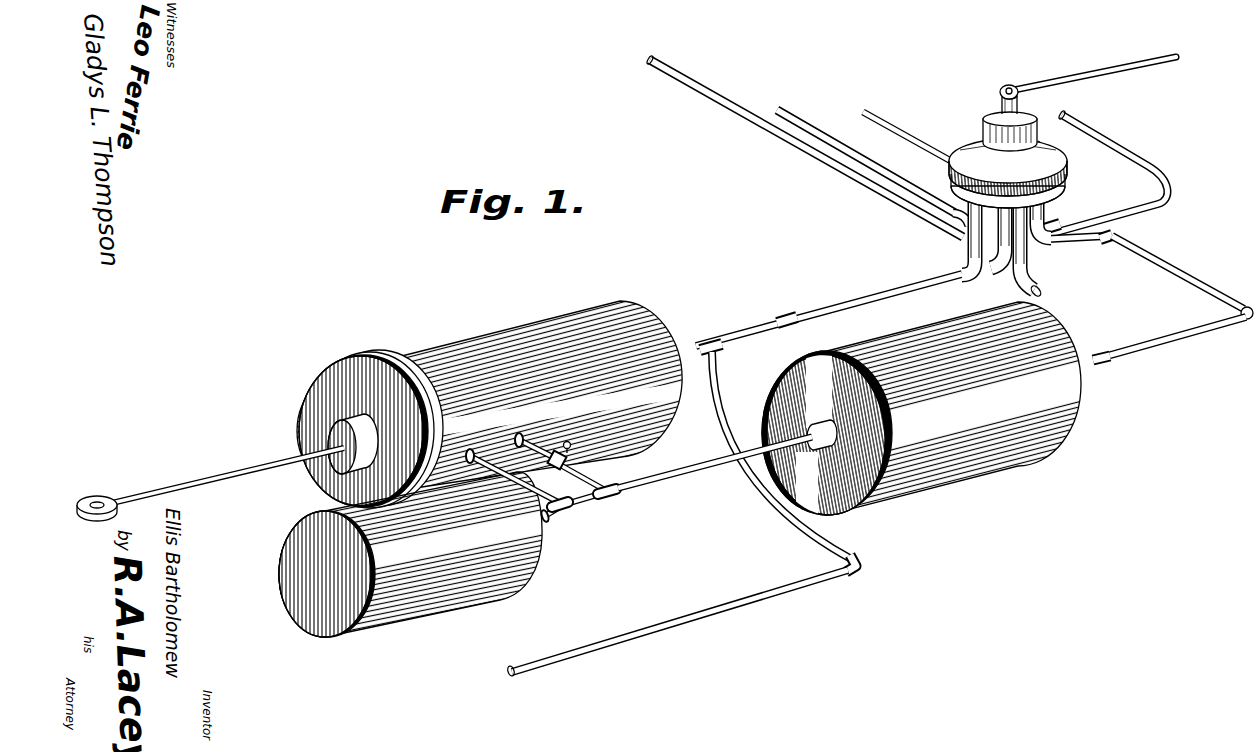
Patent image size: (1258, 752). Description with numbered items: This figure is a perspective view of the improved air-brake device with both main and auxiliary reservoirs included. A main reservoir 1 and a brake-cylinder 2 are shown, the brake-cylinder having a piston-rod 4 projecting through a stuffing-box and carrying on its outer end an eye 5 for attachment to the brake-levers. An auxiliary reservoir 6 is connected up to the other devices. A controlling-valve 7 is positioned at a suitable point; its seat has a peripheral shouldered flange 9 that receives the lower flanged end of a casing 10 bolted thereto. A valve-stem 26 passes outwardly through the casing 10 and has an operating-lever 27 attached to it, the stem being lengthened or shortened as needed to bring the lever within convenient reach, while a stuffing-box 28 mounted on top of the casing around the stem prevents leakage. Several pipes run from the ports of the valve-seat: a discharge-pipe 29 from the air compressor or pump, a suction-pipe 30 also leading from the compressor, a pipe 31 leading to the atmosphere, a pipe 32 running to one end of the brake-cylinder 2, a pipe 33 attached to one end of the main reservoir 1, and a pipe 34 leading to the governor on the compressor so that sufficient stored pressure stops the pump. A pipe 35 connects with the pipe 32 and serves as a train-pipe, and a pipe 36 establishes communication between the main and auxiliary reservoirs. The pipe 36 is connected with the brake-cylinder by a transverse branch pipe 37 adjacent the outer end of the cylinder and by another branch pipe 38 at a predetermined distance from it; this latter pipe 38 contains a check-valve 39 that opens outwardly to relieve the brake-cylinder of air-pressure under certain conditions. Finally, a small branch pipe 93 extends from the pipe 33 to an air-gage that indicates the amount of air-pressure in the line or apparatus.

The main reservoir 1 is at (925, 410).
The brake-cylinder 2 is at (495, 400).
The piston-rod 4 is at (276, 452).
The eye 5 is at (104, 500).
The auxiliary reservoir 6 is at (415, 550).
The controlling-valve 7 is at (1004, 200).
The peripheral shouldered flange 9 is at (1064, 197).
The casing 10 is at (1068, 164).
The valve-stem 26 is at (1023, 101).
The operating-lever 27 is at (1018, 87).
The stuffing-box 28 is at (996, 116).
The discharge-pipe 29 is at (943, 225).
The suction-pipe 30 is at (888, 207).
The pipe 31 is at (1039, 285).
The pipe 32 is at (945, 272).
The pipe 33 is at (1096, 247).
The pipe 34 is at (1141, 200).
The pipe 35 is at (722, 412).
The pipe 36 is at (715, 470).
The transverse branch pipe 37 is at (565, 511).
The branch pipe 38 is at (608, 484).
The check-valve 39 is at (578, 466).
The small branch pipe 93 is at (906, 130).